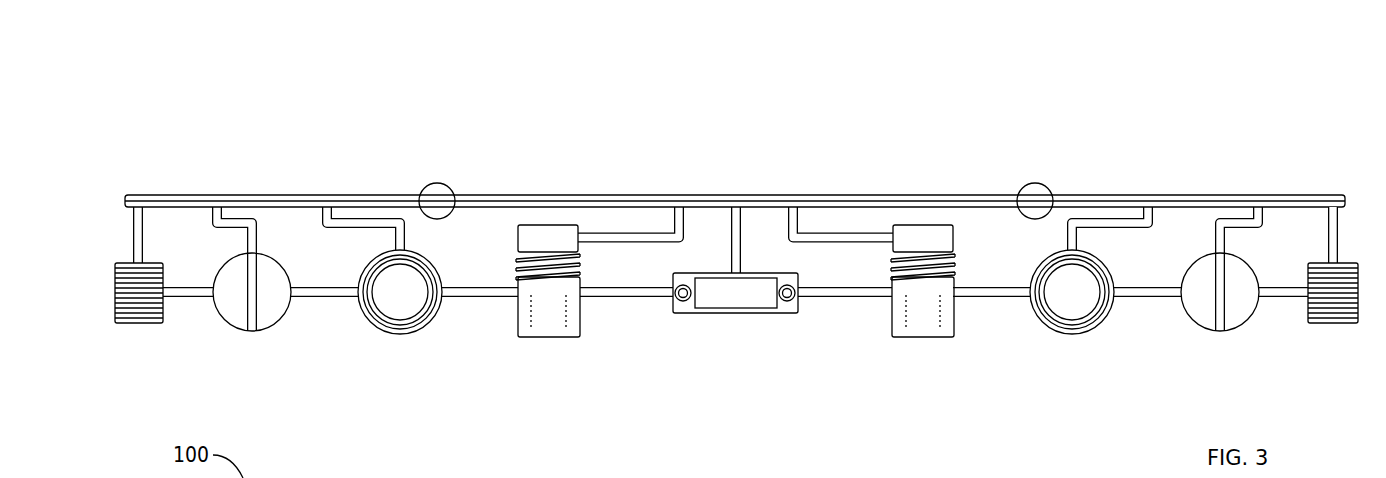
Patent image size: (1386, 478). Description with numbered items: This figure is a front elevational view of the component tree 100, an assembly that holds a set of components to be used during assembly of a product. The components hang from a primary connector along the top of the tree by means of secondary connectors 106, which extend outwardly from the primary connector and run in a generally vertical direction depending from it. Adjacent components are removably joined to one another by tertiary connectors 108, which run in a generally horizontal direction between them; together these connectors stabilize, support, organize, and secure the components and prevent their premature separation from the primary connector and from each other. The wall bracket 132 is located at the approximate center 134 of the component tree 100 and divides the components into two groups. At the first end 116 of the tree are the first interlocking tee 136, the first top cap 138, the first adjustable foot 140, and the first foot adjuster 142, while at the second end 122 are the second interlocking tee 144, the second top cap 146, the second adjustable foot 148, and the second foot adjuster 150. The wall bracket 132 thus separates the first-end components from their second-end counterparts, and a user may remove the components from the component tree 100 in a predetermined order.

The component tree 100 is at (243, 88).
The secondary connectors 106 is at (163, 195).
The tertiary connectors 108 is at (185, 297).
The first end 116 is at (1348, 200).
The second end 122 is at (133, 242).
The wall bracket 132 is at (690, 315).
The approximate center 134 is at (737, 207).
The first interlocking tee 136 is at (1333, 323).
The first top cap 138 is at (1220, 331).
The first adjustable foot 140 is at (1072, 334).
The first foot adjuster 142 is at (922, 297).
The second interlocking tee 144 is at (138, 323).
The second top cap 146 is at (252, 331).
The second adjustable foot 148 is at (400, 334).
The second foot adjuster 150 is at (550, 297).